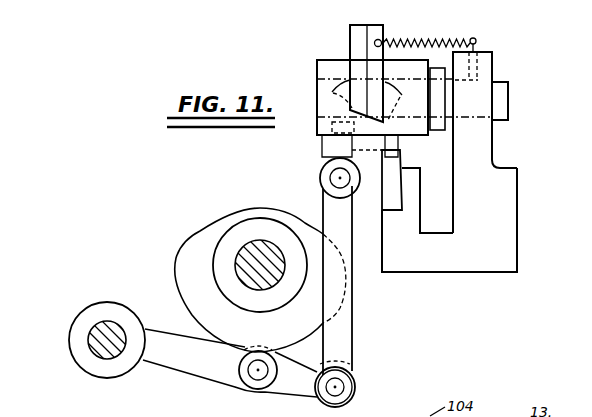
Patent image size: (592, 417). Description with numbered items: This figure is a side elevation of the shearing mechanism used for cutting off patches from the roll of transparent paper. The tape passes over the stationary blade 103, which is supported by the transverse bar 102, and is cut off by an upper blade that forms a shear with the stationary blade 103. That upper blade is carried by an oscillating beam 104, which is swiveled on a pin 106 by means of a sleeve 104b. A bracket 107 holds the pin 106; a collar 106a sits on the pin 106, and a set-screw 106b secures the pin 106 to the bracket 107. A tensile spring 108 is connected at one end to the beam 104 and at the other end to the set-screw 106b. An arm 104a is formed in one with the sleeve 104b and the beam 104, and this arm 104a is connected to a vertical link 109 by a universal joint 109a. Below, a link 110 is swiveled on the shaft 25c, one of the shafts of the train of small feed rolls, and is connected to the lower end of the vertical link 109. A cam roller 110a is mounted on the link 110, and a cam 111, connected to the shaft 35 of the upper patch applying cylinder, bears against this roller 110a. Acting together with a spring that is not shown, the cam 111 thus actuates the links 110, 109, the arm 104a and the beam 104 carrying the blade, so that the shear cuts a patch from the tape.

The oscillating beam 104 is at (350, 33).
The sleeve 104b is at (317, 70).
The arm 104a is at (345, 150).
The tensile spring 108 is at (445, 42).
The pin 106 is at (510, 100).
The collar 106a is at (456, 150).
The set-screw 106b is at (477, 39).
The bracket 107 is at (459, 142).
The transverse bar 102 is at (449, 220).
The stationary blade 103 is at (392, 172).
The vertical link 109 is at (352, 296).
The universal joint 109a is at (324, 166).
The cam 111 is at (260, 280).
The shaft 35 is at (270, 228).
The link 110 is at (230, 363).
The cam roller 110a is at (257, 390).
The shaft 25c is at (107, 347).